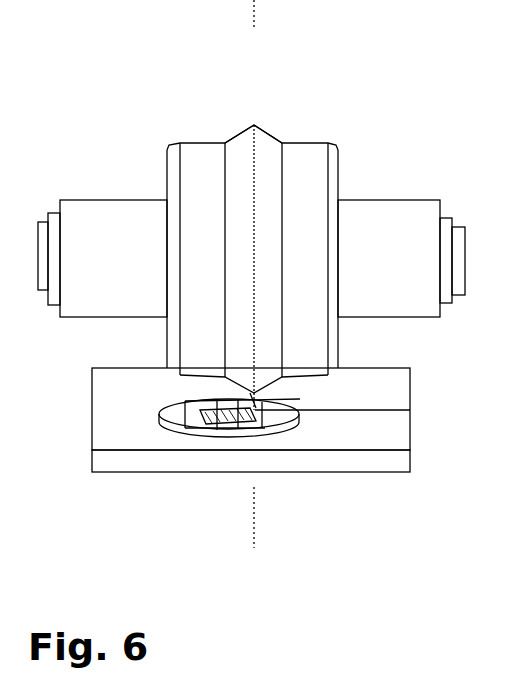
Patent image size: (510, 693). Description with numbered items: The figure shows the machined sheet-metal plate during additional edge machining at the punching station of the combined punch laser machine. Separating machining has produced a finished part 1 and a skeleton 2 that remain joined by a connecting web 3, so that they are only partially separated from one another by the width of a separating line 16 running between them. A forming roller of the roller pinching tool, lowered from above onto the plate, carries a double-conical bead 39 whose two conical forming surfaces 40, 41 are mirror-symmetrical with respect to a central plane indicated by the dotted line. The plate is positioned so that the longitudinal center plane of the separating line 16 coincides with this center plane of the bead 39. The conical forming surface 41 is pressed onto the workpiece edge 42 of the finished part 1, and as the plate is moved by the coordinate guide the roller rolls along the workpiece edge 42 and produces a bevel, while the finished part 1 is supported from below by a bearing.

The finished part 1 is at (377, 392).
The skeleton 2 is at (110, 425).
The connecting web 3 is at (229, 436).
The separating line 16 is at (256, 408).
The double-conical bead 39 is at (254, 110).
The conical forming surface 40 is at (238, 137).
The conical forming surface 41 is at (268, 137).
The workpiece edge 42 is at (250, 393).